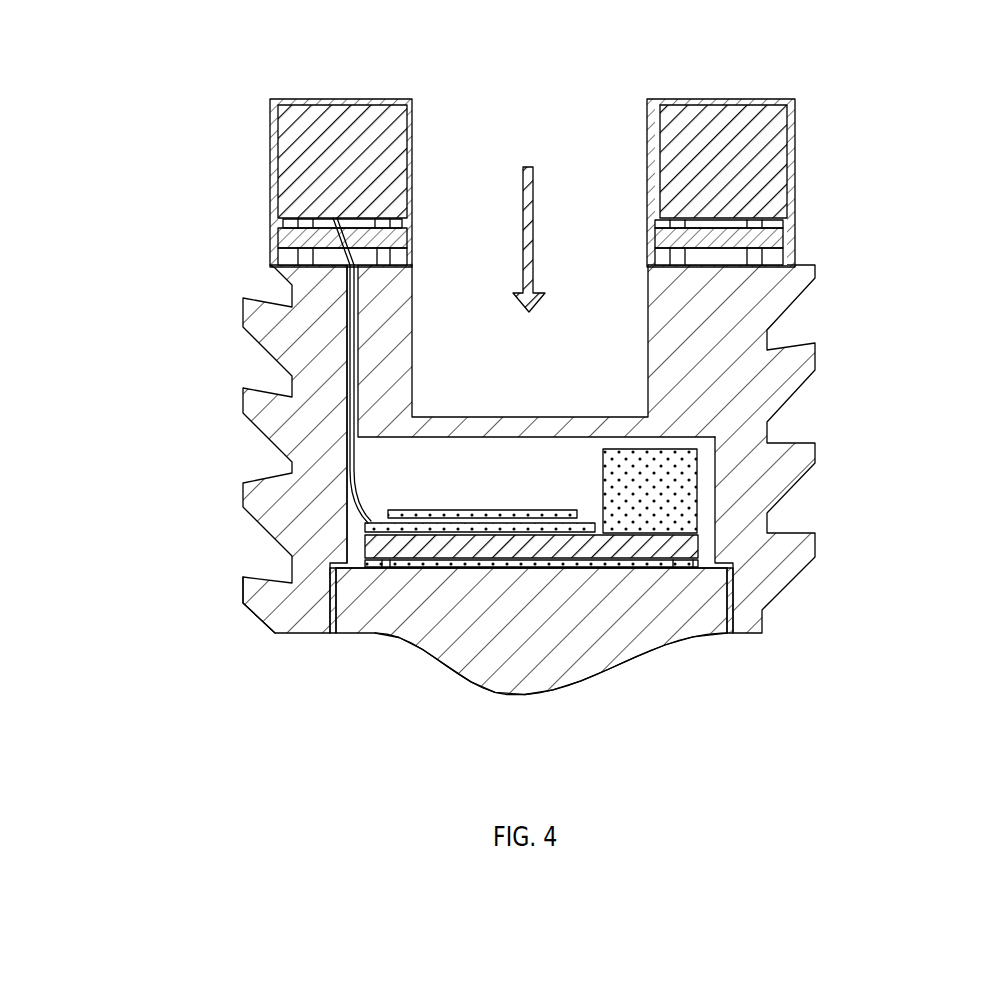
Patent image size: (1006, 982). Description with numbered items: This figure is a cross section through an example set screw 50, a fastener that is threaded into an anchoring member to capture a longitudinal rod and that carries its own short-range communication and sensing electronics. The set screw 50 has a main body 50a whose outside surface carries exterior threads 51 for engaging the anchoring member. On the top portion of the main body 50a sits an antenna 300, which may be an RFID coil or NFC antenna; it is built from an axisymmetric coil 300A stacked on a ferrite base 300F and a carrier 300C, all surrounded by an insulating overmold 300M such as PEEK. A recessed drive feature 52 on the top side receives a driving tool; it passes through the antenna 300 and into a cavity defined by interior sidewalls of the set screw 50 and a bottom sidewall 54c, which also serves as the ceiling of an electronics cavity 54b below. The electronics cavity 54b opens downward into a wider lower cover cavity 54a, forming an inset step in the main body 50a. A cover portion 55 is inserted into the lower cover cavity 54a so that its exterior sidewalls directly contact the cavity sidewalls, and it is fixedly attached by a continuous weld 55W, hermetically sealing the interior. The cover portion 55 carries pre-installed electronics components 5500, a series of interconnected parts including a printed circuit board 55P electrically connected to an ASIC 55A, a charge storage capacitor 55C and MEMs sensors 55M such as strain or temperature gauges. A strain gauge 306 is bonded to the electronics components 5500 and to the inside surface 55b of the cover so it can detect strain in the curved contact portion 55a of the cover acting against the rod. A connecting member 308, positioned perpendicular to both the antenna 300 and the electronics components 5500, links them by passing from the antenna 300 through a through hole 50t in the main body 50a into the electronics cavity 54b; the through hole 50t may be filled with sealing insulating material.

The set screw 50 is at (200, 125).
The drive feature 52 is at (583, 92).
The antenna 300 is at (618, 186).
The axisymmetric coil 300A is at (778, 127).
The overmold 300M is at (790, 167).
The ferrite base 300F is at (782, 235).
The carrier 300C is at (592, 249).
The through hole 50t is at (345, 332).
The electronics cavity 54b is at (204, 390).
The bottom sidewall 54c is at (565, 425).
The lower cover cavity 54a is at (727, 690).
The main body 50a is at (305, 445).
The connecting member 308 is at (355, 488).
The exterior threads 51 is at (252, 586).
The continuous weld 55W is at (333, 633).
The strain gauge 306 is at (437, 550).
The cover portion 55 is at (460, 650).
The ASIC 55a is at (520, 697).
The inside surface of cover 55b is at (617, 568).
The charge storage capacitor 55C is at (680, 482).
The ASIC 55A is at (567, 515).
The printed circuit board 55P is at (595, 527).
The MEMs sensors 55M is at (866, 610).
The electronics components 5500 is at (583, 568).